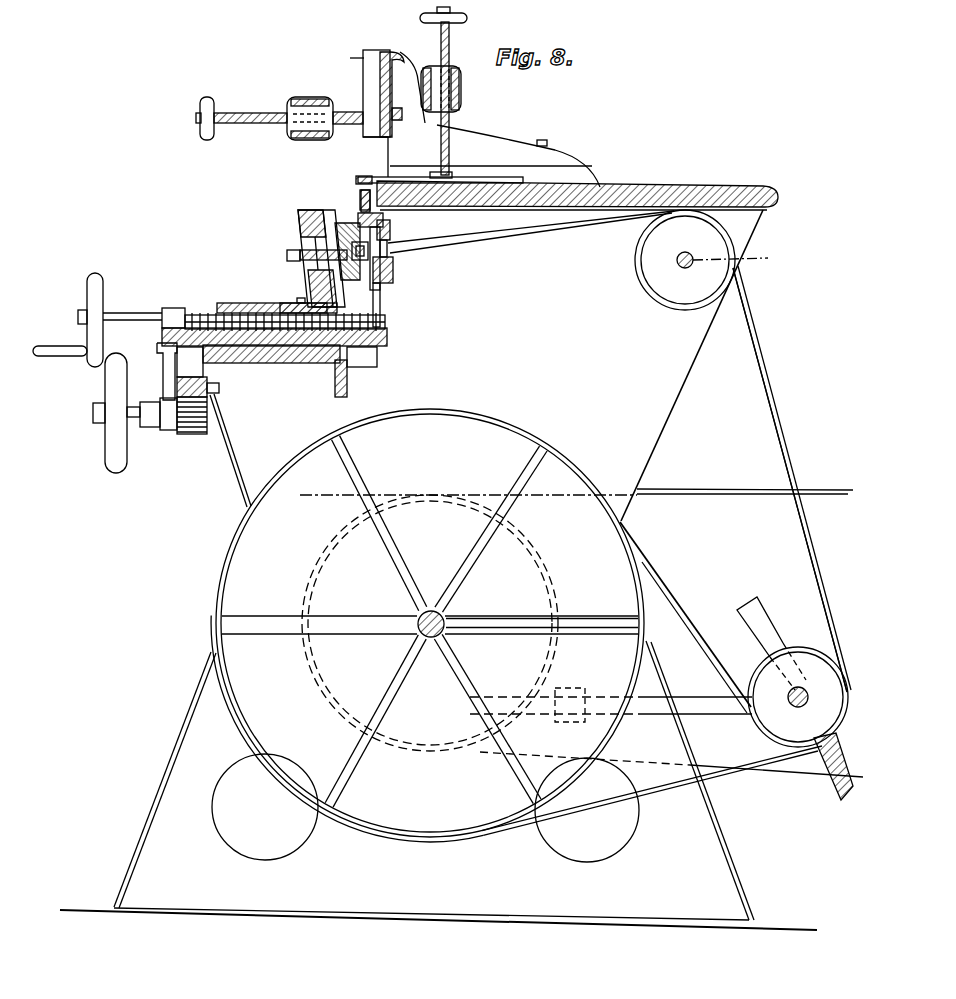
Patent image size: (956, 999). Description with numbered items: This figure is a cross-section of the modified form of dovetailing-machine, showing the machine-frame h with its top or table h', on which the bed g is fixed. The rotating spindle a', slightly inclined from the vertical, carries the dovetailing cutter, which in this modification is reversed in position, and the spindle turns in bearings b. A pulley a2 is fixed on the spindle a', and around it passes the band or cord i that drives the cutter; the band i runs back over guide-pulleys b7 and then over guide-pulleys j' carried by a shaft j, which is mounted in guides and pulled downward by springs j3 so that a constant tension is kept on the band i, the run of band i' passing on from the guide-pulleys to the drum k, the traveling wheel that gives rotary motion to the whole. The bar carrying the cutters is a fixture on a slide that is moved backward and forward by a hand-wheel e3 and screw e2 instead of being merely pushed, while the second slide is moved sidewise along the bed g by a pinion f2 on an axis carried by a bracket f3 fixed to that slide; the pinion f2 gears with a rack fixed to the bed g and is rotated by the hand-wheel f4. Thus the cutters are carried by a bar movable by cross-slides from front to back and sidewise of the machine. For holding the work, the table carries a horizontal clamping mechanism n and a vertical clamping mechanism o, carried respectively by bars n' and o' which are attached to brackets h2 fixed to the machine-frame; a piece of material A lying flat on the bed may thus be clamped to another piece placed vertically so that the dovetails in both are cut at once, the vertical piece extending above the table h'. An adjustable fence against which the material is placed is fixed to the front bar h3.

The vertical clamping mechanism o is at (241, 115).
The bar o' is at (325, 108).
The horizontal clamping mechanism n is at (443, 92).
The bar n' is at (452, 89).
The front bar h3 is at (386, 93).
The bracket h2 is at (481, 119).
The piece of material A is at (440, 171).
The dovetailing-tool a is at (352, 189).
The top or table h' is at (577, 191).
The bearings b is at (393, 250).
The rotating spindle a' is at (393, 258).
The pulley a2 is at (531, 242).
The band or cord i is at (619, 507).
The belt run i' is at (790, 480).
The guide-pulleys b7 is at (685, 260).
The machine-frame h is at (461, 570).
The drum k is at (516, 625).
The shaft j is at (785, 697).
The guide-pulleys j' is at (774, 643).
The springs j3 is at (824, 760).
The hand-wheel e3 is at (97, 313).
The screw e2 is at (197, 313).
The bed g is at (290, 362).
The bracket f3 is at (161, 371).
The pinion f2 is at (190, 434).
The hand-wheel f4 is at (128, 413).